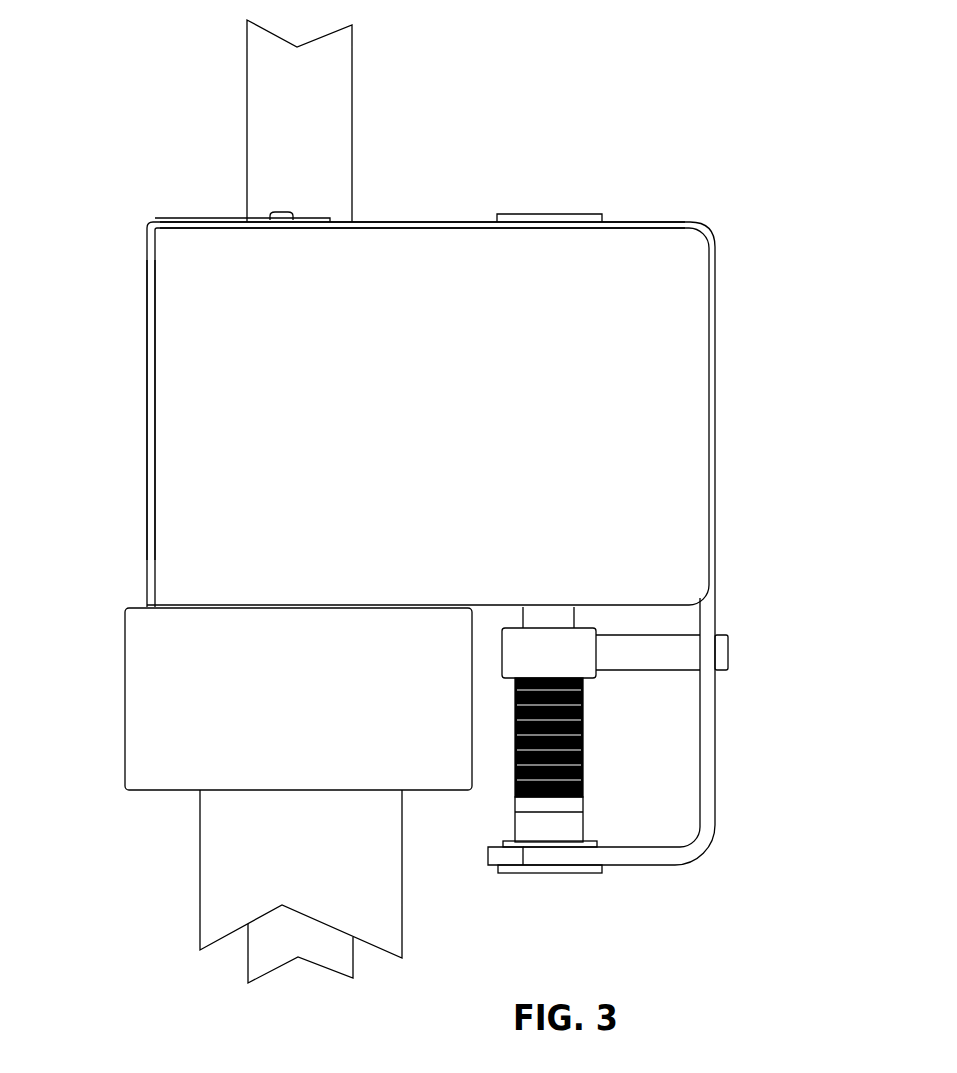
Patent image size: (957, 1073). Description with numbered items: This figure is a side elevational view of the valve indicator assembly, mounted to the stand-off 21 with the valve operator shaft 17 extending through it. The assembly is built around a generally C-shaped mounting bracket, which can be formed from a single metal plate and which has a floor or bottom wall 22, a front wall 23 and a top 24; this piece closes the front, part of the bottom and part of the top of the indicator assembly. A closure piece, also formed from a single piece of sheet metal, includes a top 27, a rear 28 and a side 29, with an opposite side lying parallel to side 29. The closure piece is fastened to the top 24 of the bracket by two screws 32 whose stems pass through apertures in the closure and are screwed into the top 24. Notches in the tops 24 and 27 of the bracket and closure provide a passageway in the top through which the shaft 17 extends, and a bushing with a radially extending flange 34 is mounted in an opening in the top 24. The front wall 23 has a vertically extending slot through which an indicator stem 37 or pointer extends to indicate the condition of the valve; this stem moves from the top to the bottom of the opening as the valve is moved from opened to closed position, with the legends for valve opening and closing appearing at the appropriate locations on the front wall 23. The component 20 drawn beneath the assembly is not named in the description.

The shaft 17 is at (278, 105).
The block 20 is at (210, 712).
The stand-off 21 is at (242, 847).
The bottom wall 22 is at (652, 857).
The front wall 23 is at (710, 612).
The top 24 is at (433, 222).
The top 27 is at (180, 221).
The rear 28 is at (153, 332).
The side 29 is at (432, 430).
The screws 32 is at (293, 210).
The radially extending flange 34 is at (585, 214).
The indicator stem 37 is at (722, 658).